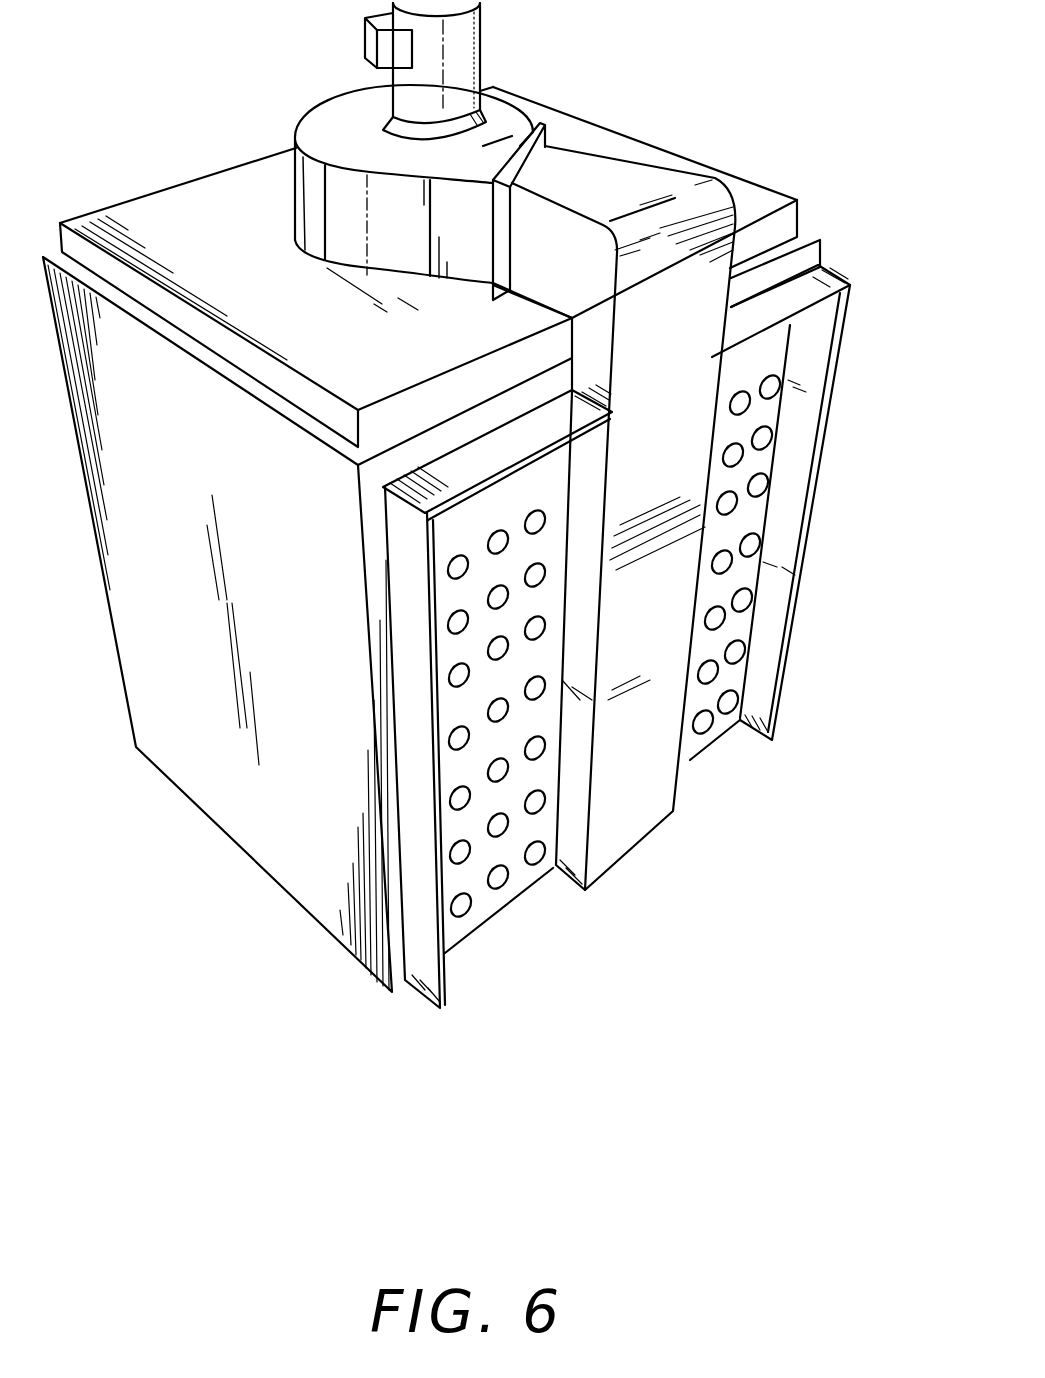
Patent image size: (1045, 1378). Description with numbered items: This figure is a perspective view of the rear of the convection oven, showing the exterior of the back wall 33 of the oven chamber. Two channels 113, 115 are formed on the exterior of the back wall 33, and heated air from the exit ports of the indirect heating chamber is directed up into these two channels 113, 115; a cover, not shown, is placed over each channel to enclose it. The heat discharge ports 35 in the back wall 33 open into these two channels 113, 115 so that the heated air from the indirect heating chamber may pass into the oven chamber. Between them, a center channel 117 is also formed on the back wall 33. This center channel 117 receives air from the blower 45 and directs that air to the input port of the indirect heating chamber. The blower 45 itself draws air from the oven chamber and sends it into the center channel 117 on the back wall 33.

The blower 45 is at (480, 42).
The back wall 33 is at (815, 553).
The heat discharge ports 35 is at (760, 484).
The channel 113 is at (478, 913).
The channel 115 is at (718, 730).
The center channel 117 is at (637, 812).